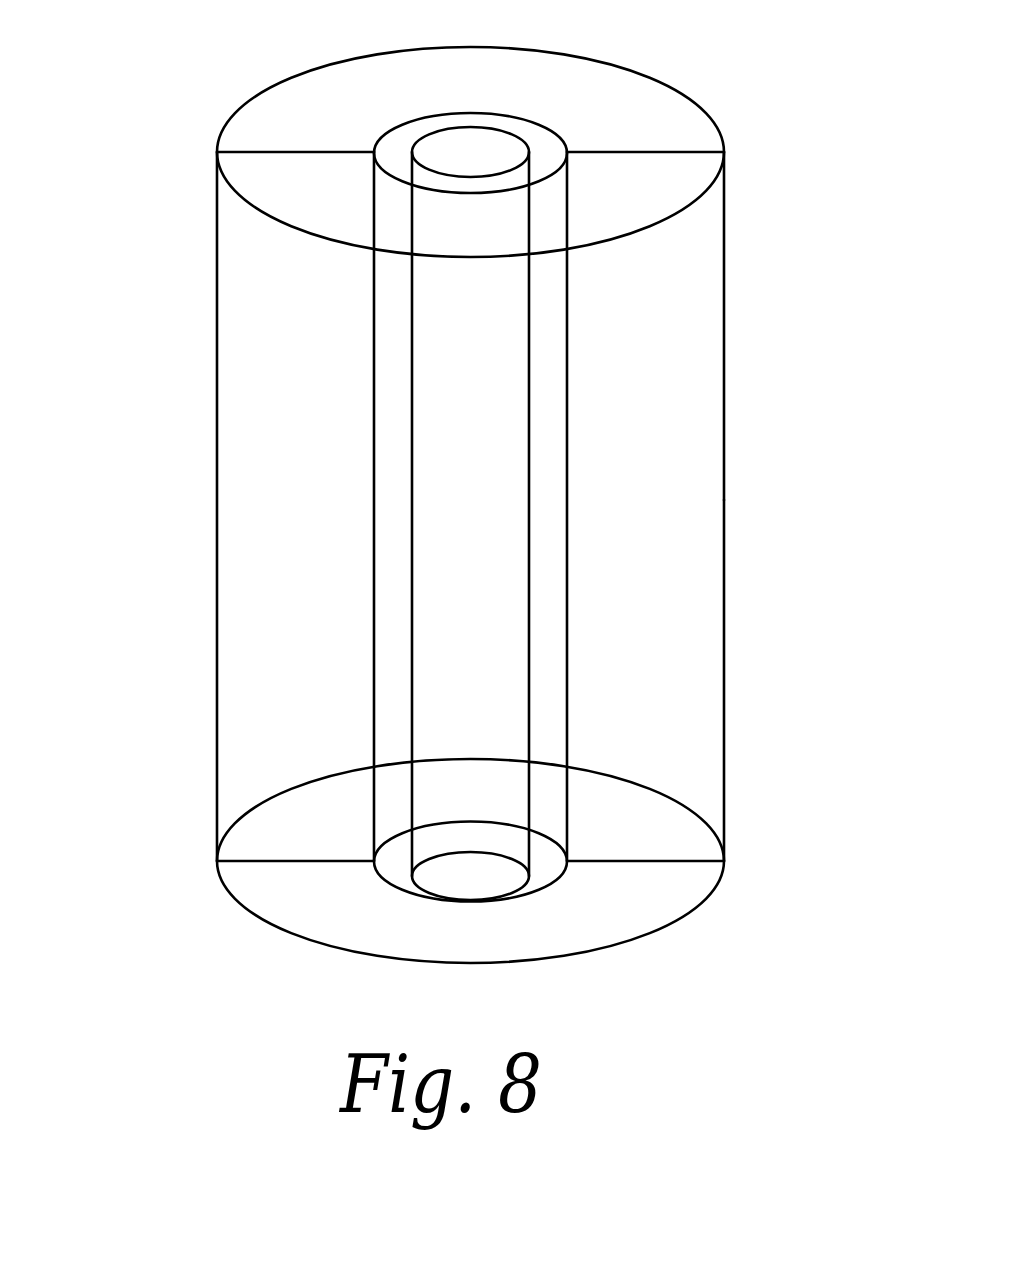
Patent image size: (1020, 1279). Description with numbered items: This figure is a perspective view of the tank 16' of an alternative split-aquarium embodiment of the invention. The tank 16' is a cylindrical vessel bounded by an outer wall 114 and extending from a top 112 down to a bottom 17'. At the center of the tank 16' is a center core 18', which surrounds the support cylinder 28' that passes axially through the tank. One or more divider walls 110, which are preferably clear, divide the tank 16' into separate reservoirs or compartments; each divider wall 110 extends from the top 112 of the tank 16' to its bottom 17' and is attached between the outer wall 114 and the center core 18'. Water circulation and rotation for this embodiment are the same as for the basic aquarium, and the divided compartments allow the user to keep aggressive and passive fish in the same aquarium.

The divider wall 110 is at (332, 152).
The top 112 is at (724, 153).
The tank 16' is at (559, 506).
The outer wall 114 is at (723, 417).
The center core 18' is at (609, 507).
The support cylinder 28' is at (310, 513).
The bottom 17' is at (388, 861).